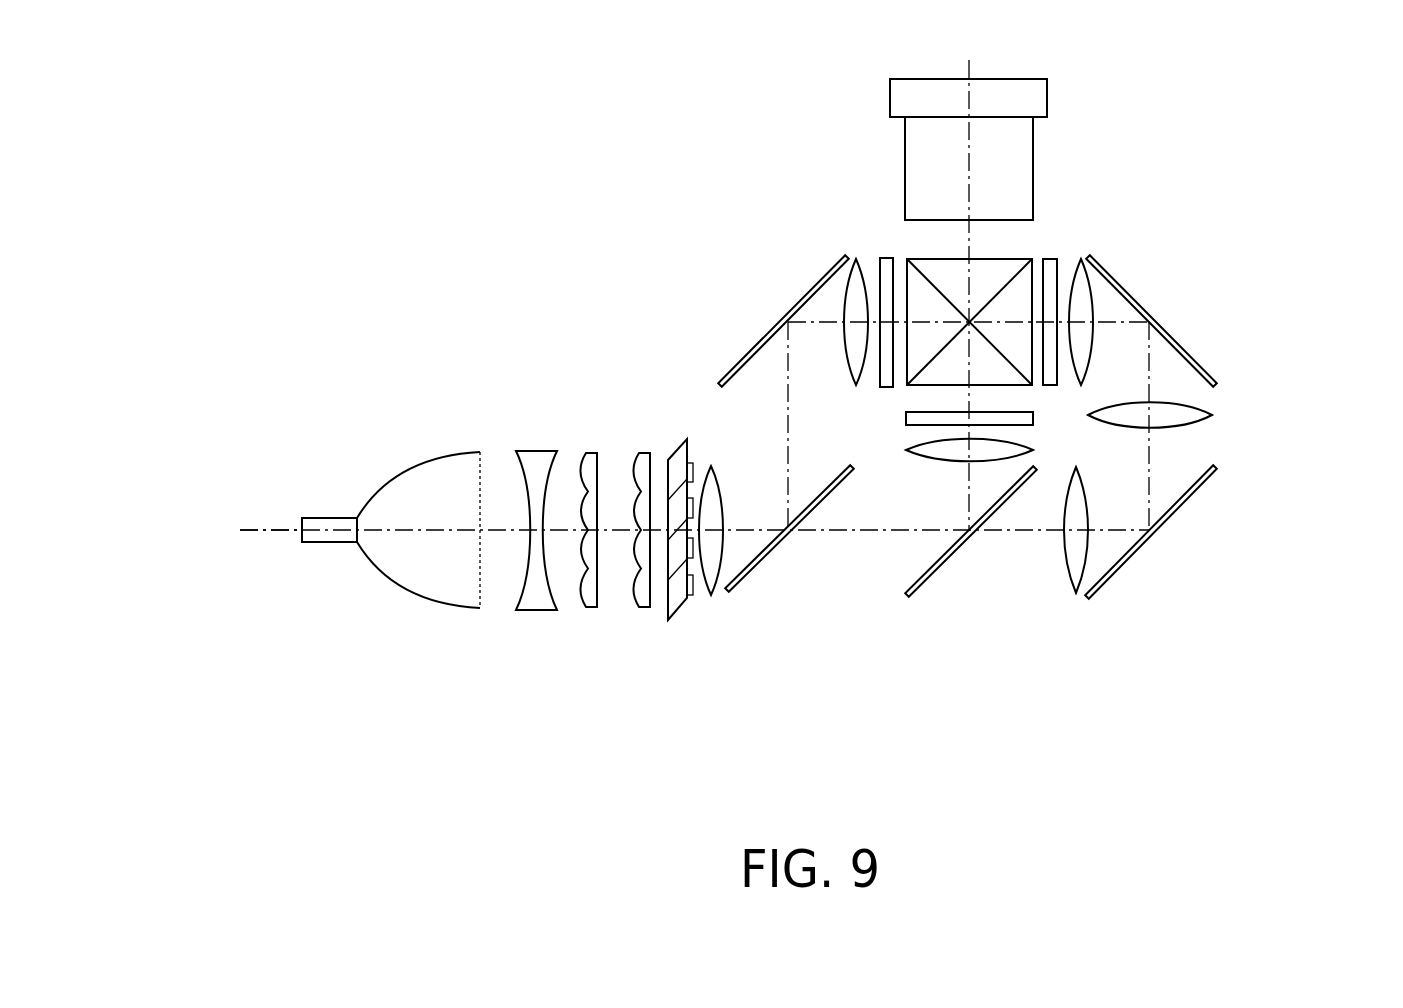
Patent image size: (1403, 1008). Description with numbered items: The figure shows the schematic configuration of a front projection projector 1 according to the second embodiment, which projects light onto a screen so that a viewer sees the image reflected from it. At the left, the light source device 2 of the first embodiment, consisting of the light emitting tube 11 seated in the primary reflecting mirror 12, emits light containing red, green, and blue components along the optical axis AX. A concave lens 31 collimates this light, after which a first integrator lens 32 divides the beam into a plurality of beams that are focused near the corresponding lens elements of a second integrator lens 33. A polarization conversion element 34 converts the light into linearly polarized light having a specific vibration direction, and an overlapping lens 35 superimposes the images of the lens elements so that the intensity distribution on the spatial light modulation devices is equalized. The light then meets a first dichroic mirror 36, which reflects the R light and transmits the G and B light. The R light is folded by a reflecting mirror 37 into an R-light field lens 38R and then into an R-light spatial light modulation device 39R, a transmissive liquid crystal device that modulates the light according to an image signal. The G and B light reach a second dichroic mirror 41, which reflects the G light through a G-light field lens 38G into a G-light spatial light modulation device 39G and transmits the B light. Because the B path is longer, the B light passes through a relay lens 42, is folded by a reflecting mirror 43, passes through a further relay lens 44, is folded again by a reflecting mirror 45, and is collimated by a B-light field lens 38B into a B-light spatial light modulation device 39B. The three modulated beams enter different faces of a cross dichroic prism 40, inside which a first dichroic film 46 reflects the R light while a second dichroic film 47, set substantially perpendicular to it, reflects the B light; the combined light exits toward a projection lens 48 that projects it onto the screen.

The projector 1 is at (522, 160).
The light source device 2 is at (425, 432).
The optical axis AX is at (272, 525).
The light emitting tube 11 is at (327, 545).
The primary reflecting mirror 12 is at (412, 570).
The concave lens 31 is at (540, 450).
The first integrator lens 32 is at (587, 610).
The second integrator lens 33 is at (641, 612).
The polarization conversion element 34 is at (674, 622).
The overlapping lens 35 is at (712, 598).
The first dichroic mirror 36 is at (745, 592).
The reflecting mirror 37 is at (765, 330).
The R-light field lens 38R is at (855, 262).
The G-light field lens 38G is at (903, 462).
The B-light field lens 38B is at (1085, 258).
The R-light spatial light modulation device 39R is at (886, 256).
The G-light spatial light modulation device 39G is at (1033, 425).
The B-light spatial light modulation device 39B is at (1052, 257).
The cross dichroic prism 40 is at (910, 368).
The second dichroic mirror 41 is at (937, 575).
The relay lens 42 is at (1077, 592).
The reflecting mirror 43 is at (1180, 520).
The relay lens 44 is at (1212, 415).
The reflecting mirror 45 is at (1200, 365).
The first dichroic film 46 is at (1017, 268).
The second dichroic film 47 is at (1032, 378).
The projection lens 48 is at (1048, 90).